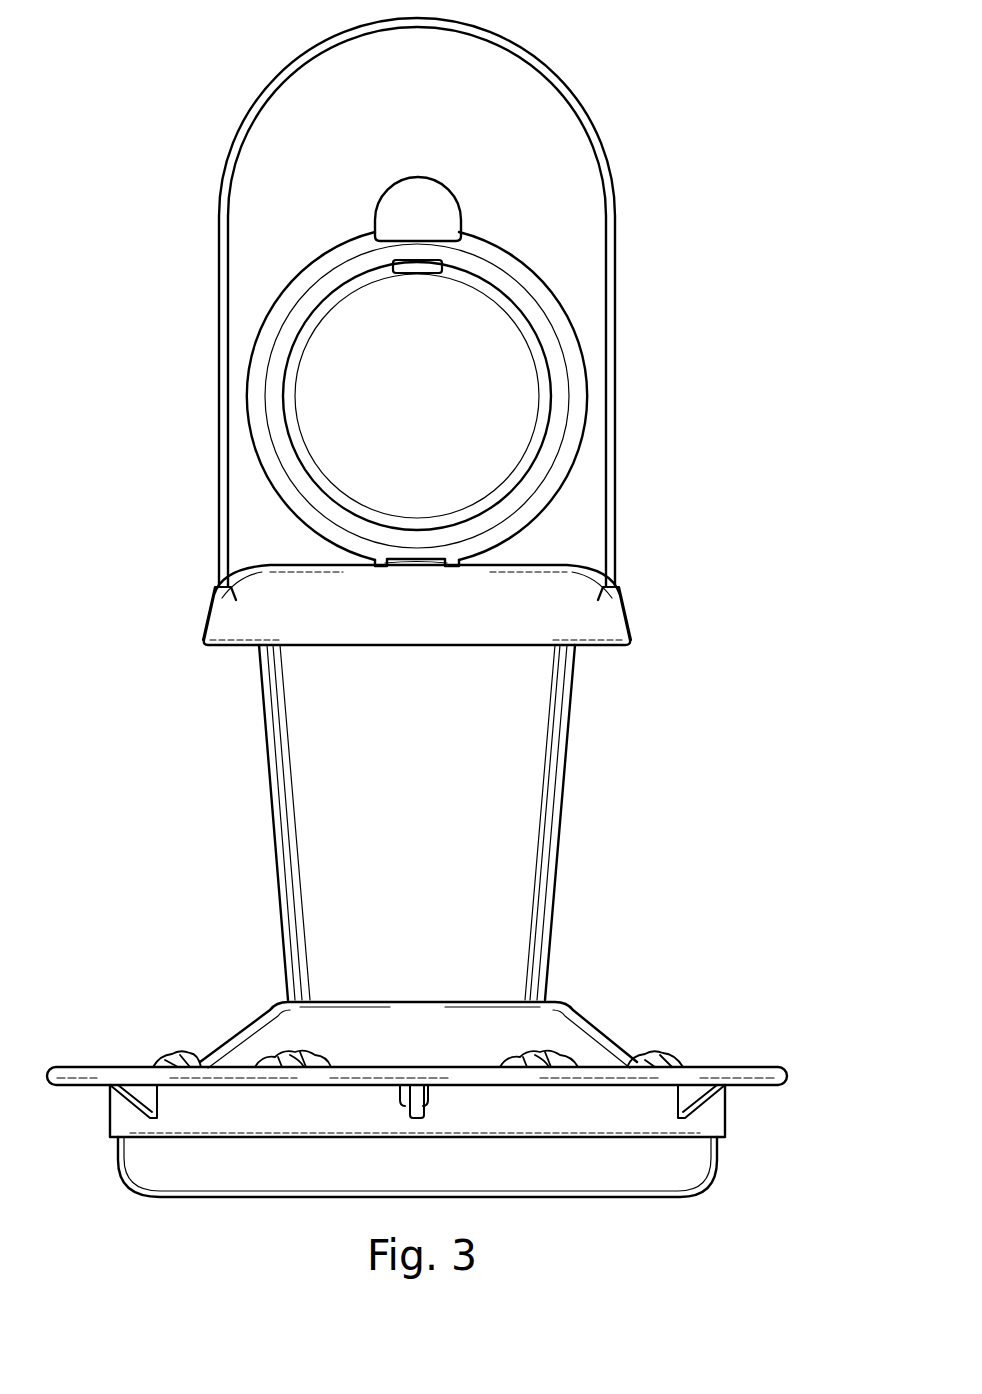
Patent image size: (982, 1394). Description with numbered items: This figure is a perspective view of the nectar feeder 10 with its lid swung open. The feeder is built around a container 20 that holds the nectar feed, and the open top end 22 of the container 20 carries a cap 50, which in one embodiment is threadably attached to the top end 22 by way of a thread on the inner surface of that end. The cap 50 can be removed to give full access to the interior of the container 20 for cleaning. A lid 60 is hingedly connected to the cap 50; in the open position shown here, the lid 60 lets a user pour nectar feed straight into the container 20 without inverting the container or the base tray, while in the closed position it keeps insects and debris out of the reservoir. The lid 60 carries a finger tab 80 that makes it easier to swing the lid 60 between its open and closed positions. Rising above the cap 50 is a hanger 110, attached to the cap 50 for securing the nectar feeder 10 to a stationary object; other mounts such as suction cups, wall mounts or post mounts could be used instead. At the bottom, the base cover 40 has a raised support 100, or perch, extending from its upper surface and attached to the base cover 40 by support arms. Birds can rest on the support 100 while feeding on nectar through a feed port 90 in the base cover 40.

The nectar feeder 10 is at (728, 130).
The container 20 is at (563, 818).
The top end 22 is at (578, 648).
The base cover 40 is at (615, 1050).
The cap 50 is at (632, 638).
The lid 60 is at (558, 305).
The finger tab 80 is at (395, 195).
The feed port 90 is at (550, 1057).
The support 100 is at (787, 1067).
The hanger 110 is at (220, 193).